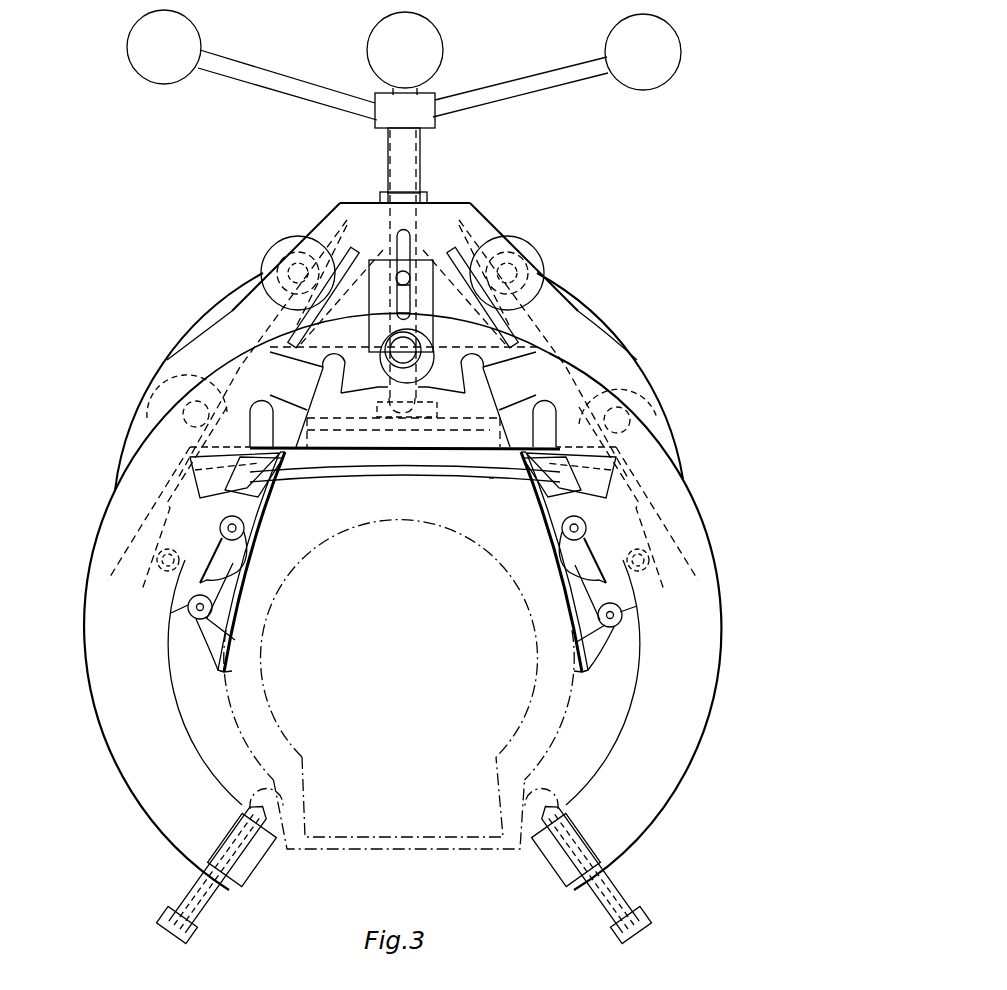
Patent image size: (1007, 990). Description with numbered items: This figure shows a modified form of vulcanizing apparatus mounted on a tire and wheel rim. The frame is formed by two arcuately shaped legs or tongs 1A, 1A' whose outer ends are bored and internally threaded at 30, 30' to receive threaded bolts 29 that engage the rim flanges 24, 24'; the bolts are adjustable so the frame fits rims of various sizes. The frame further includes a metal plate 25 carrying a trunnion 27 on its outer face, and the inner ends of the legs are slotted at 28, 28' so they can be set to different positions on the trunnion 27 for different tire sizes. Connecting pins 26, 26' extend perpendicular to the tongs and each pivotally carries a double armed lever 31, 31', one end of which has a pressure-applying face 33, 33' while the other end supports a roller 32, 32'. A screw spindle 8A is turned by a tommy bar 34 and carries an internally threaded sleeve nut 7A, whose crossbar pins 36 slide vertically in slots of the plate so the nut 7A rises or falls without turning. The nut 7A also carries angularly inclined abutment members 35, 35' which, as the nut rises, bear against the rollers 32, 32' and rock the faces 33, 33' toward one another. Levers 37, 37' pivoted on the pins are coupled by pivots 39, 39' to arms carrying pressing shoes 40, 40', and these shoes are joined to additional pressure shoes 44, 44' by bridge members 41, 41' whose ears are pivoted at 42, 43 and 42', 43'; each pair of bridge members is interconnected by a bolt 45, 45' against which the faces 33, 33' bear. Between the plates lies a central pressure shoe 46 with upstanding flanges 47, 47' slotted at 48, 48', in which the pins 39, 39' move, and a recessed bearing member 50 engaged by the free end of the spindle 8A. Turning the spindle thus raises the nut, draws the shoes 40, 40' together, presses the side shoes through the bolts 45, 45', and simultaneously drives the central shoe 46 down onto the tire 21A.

The tommy bar 34 is at (252, 72).
The screw spindle 8A is at (407, 152).
The sleeve nut 7A is at (480, 240).
The double armed lever 31 is at (174, 381).
The double armed lever 31' is at (610, 376).
The metal plate 25 is at (577, 347).
The arcuately shaped leg or tong 1A is at (163, 635).
The arcuately shaped leg or tong 1A' is at (635, 621).
The rim flange 24 is at (311, 787).
The rim flange 24' is at (489, 789).
The pipe 21A is at (392, 507).
The internally threaded bore 30 is at (257, 853).
The internally threaded bore 30' is at (546, 859).
The threaded bolt 29 is at (192, 905).
The roller 32 is at (287, 247).
The roller 32' is at (530, 259).
The angularly inclined abutment member 35 is at (335, 279).
The angularly inclined abutment member 35' is at (497, 286).
The pin 36 is at (410, 242).
The trunnion or pin 27 is at (383, 347).
The recessed bearing member 50 is at (407, 416).
The slot 28' is at (415, 400).
The slot 28 is at (403, 380).
The connecting bolt or pin 26 is at (155, 400).
The connecting bolt or pin 26' is at (642, 396).
The upstanding flange 47 is at (203, 472).
The upstanding flange 47' is at (602, 473).
The slot 48 is at (254, 477).
The slot 48' is at (593, 474).
The pressure-applying face 33 is at (167, 498).
The pressure-applying face 33' is at (638, 498).
The bolt 45 is at (143, 555).
The bolt 45' is at (661, 556).
The pivot 39 is at (405, 493).
The pivot 39' is at (405, 502).
The lever 37 is at (325, 480).
The lever 37' is at (473, 481).
The pressure shoe 46 is at (492, 477).
The pressing shoe 40 is at (267, 562).
The pressing shoe 40' is at (545, 562).
The pressure shoe 44 is at (240, 644).
The pressure shoe 44' is at (565, 657).
The pivot 42 is at (248, 549).
The pivot 42' is at (563, 552).
The pivot 43 is at (177, 632).
The pivot 43' is at (628, 641).
The bridge member 41 is at (175, 595).
The bridge member 41' is at (629, 605).